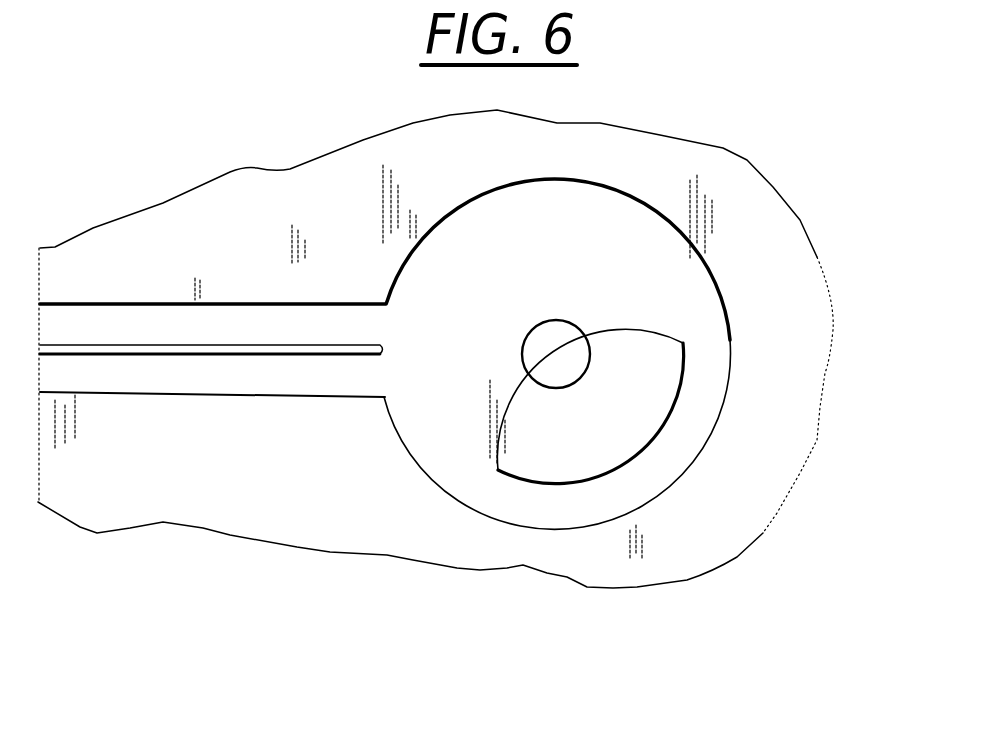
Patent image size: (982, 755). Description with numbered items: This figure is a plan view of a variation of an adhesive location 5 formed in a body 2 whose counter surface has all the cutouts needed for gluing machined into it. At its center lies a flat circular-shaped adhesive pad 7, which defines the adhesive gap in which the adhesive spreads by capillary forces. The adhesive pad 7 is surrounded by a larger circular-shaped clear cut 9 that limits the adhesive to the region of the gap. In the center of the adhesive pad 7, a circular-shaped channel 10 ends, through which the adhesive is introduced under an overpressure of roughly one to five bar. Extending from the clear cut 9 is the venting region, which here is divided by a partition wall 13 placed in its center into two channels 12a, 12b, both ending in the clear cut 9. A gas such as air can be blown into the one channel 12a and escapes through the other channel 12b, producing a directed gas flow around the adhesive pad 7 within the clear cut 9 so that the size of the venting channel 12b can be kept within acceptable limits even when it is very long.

The carrier plate 2 is at (750, 527).
The adhesive location 5 is at (632, 345).
The adhesive pad 7 is at (648, 335).
The clear cut 9 is at (698, 390).
The channel 10 is at (552, 370).
The channel 12a is at (80, 318).
The channel 12b is at (87, 370).
The partition wall 13 is at (218, 350).